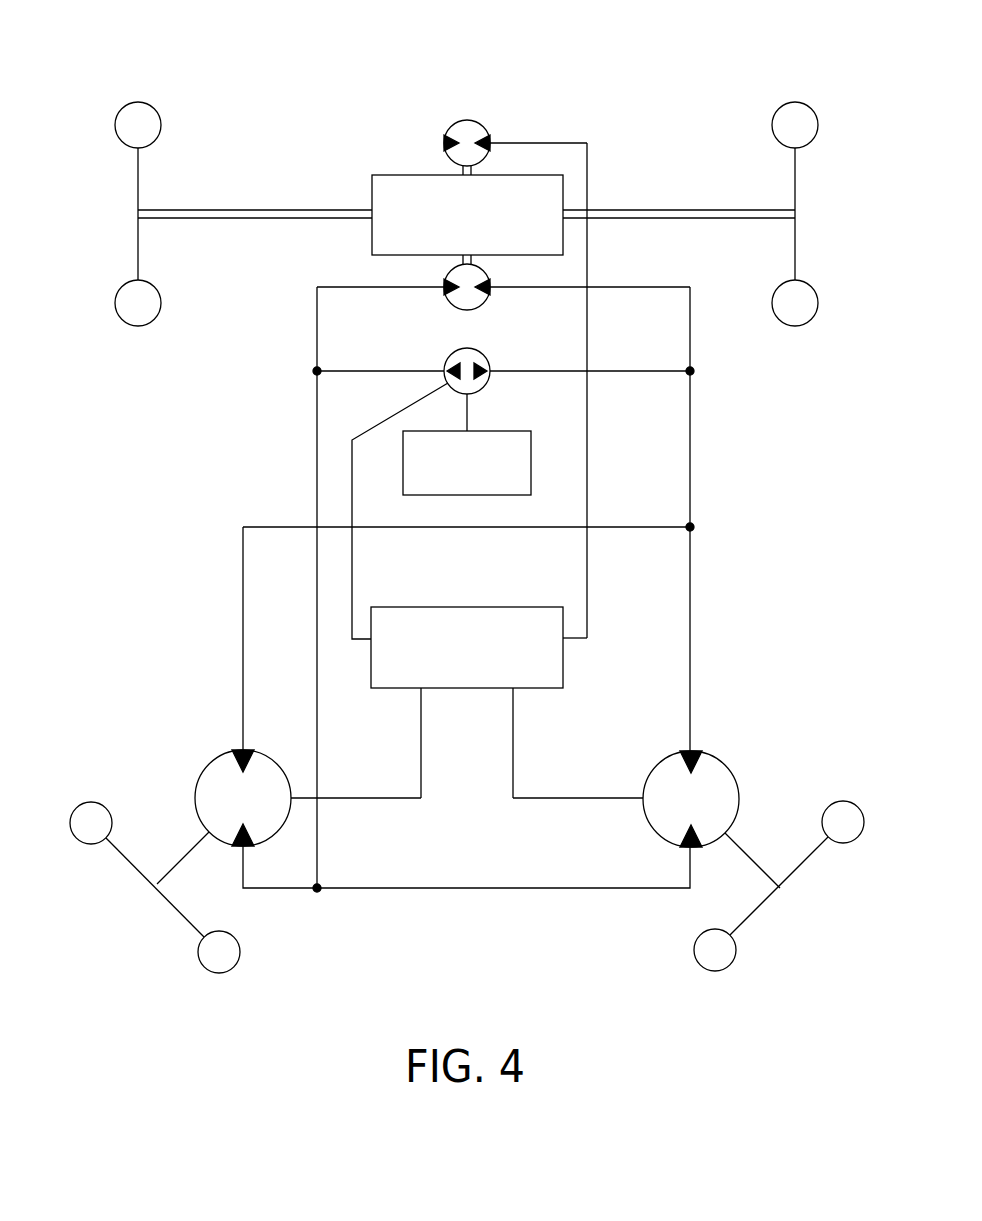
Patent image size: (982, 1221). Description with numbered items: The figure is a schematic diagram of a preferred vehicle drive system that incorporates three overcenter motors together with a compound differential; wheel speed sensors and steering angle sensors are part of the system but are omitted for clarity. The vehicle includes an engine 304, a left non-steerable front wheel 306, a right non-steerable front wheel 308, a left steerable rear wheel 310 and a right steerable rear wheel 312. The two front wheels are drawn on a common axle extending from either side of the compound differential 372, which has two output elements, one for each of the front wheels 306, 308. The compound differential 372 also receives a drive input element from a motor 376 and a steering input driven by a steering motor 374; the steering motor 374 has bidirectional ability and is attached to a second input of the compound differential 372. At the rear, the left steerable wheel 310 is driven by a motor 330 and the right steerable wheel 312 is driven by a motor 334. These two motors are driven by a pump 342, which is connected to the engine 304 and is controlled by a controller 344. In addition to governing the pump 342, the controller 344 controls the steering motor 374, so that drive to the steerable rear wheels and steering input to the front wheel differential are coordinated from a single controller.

The engine 304 is at (527, 460).
The left non-steerable front wheel 306 is at (138, 192).
The right non-steerable front wheel 308 is at (795, 198).
The left steerable rear wheel 310 is at (158, 905).
The right steerable rear wheel 312 is at (802, 872).
The motor 330 is at (205, 784).
The motor 334 is at (724, 784).
The pump 342 is at (453, 355).
The controller 344 is at (533, 675).
The compound differential 372 is at (372, 190).
The steering motor 374 is at (467, 122).
The motor 376 is at (471, 301).